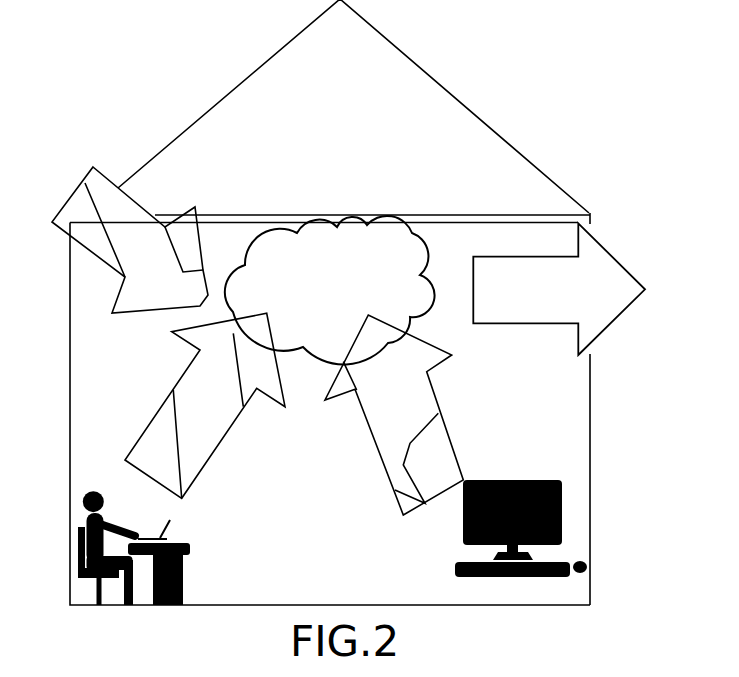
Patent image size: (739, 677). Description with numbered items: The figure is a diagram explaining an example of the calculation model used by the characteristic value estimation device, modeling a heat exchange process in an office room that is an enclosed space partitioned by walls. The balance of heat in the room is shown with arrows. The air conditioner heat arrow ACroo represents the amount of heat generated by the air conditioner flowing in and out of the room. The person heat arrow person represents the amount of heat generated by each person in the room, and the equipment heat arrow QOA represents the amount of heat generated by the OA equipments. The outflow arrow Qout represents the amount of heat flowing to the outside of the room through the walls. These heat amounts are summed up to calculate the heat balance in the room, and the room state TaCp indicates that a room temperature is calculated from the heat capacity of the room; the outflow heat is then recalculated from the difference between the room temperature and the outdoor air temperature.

The HVACroom heat amount arrow ACroo is at (130, 240).
The room temperature and heat capacity TaCp is at (330, 290).
The Qperson heat amount arrow person is at (205, 405).
The QOA heat amount arrow QOA is at (394, 415).
The Qout heat amount arrow Qout is at (559, 289).